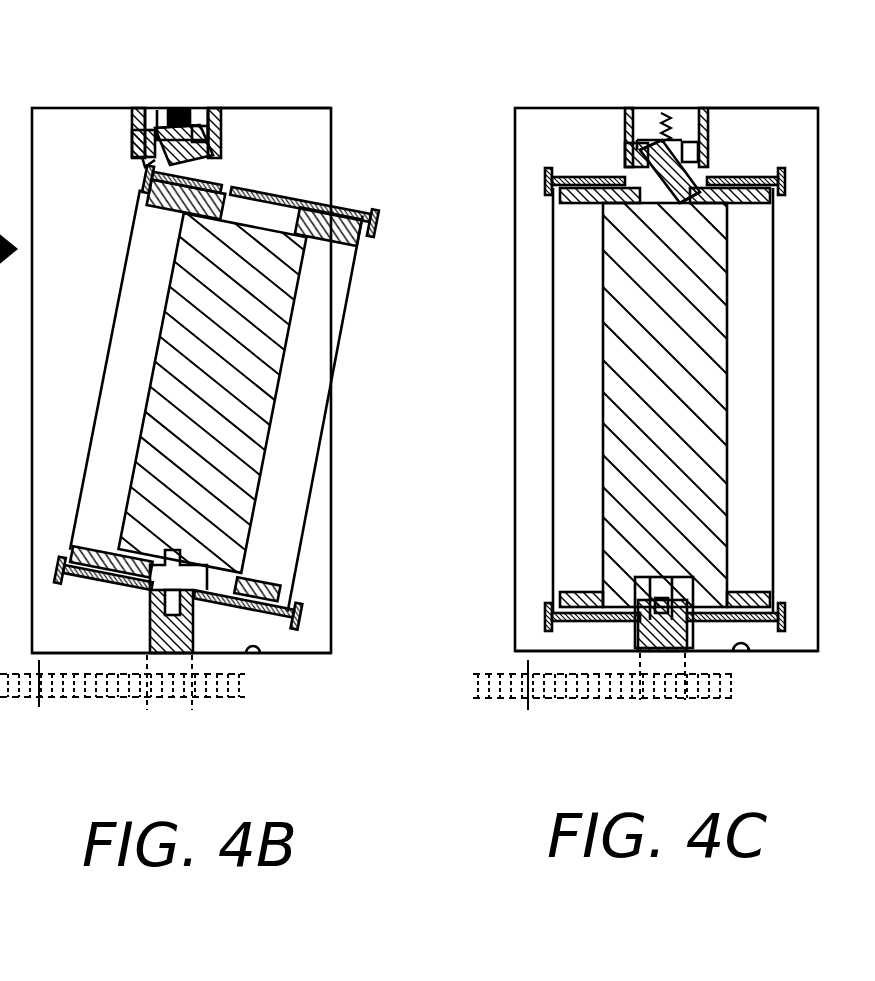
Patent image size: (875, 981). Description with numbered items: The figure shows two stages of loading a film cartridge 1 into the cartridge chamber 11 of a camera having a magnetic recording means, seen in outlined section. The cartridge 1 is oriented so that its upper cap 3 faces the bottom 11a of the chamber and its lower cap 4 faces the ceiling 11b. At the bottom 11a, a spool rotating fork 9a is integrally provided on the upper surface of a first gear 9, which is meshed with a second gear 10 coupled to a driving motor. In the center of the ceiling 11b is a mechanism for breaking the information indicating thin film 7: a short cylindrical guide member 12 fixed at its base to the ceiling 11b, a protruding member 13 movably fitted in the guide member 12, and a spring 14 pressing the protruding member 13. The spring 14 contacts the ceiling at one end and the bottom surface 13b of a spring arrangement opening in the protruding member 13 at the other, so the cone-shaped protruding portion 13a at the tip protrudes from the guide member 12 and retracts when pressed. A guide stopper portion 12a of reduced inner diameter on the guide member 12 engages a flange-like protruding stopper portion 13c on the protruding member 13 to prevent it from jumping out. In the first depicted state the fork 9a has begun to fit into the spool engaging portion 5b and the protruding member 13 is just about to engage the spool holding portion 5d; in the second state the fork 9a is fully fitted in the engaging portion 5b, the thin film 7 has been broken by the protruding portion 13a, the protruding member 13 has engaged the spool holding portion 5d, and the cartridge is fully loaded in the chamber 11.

In FIG. 4B, the film cartridge 1 is at (352, 366).
In FIG. 4C, the film cartridge 1 is at (836, 418).
In FIG. 4B, the upper cap 3 is at (270, 618).
In FIG. 4C, the upper cap 3 is at (768, 634).
In FIG. 4B, the lower cap 4 is at (348, 213).
In FIG. 4C, the lower cap 4 is at (751, 178).
In FIG. 4B, the spool engaging portion 5b is at (228, 187).
In FIG. 4C, the spool engaging portion 5b is at (628, 182).
In FIG. 4B, the spool holding portion 5d is at (278, 192).
In FIG. 4C, the spool holding portion 5d is at (619, 205).
In FIG. 4B, the information indicating thin film 7 is at (302, 212).
In FIG. 4C, the information indicating thin film 7 is at (706, 188).
In FIG. 4B, the first gear 9 is at (168, 712).
In FIG. 4C, the first gear 9 is at (632, 706).
In FIG. 4B, the spool rotating fork 9a is at (158, 627).
In FIG. 4C, the spool rotating fork 9a is at (640, 628).
In FIG. 4B, the second gear 10 is at (72, 706).
In FIG. 4C, the second gear 10 is at (505, 706).
In FIG. 4B, the cartridge chamber 11 is at (73, 98).
In FIG. 4C, the cartridge chamber 11 is at (544, 96).
In FIG. 4B, the bottom 11a is at (261, 655).
In FIG. 4C, the bottom 11a is at (750, 650).
In FIG. 4B, the ceiling 11b is at (285, 109).
In FIG. 4C, the ceiling 11b is at (799, 113).
In FIG. 4B, the guide member 12 is at (218, 110).
In FIG. 4C, the guide member 12 is at (692, 148).
In FIG. 4B, the guide stopper portion 12a is at (236, 155).
In FIG. 4C, the guide stopper portion 12a is at (709, 162).
In FIG. 4B, the protruding member 13 is at (145, 167).
In FIG. 4C, the protruding member 13 is at (657, 187).
In FIG. 4B, the cone-shaped protruding portion 13a is at (147, 182).
In FIG. 4C, the cone-shaped protruding portion 13a is at (686, 200).
In FIG. 4B, the bottom surface of spring arrangement opening 13b is at (175, 110).
In FIG. 4C, the bottom surface of spring arrangement opening 13b is at (638, 147).
In FIG. 4B, the protruding stopper portion 13c is at (132, 128).
In FIG. 4C, the protruding stopper portion 13c is at (626, 158).
In FIG. 4B, the spring 14 is at (185, 112).
In FIG. 4C, the spring 14 is at (668, 146).